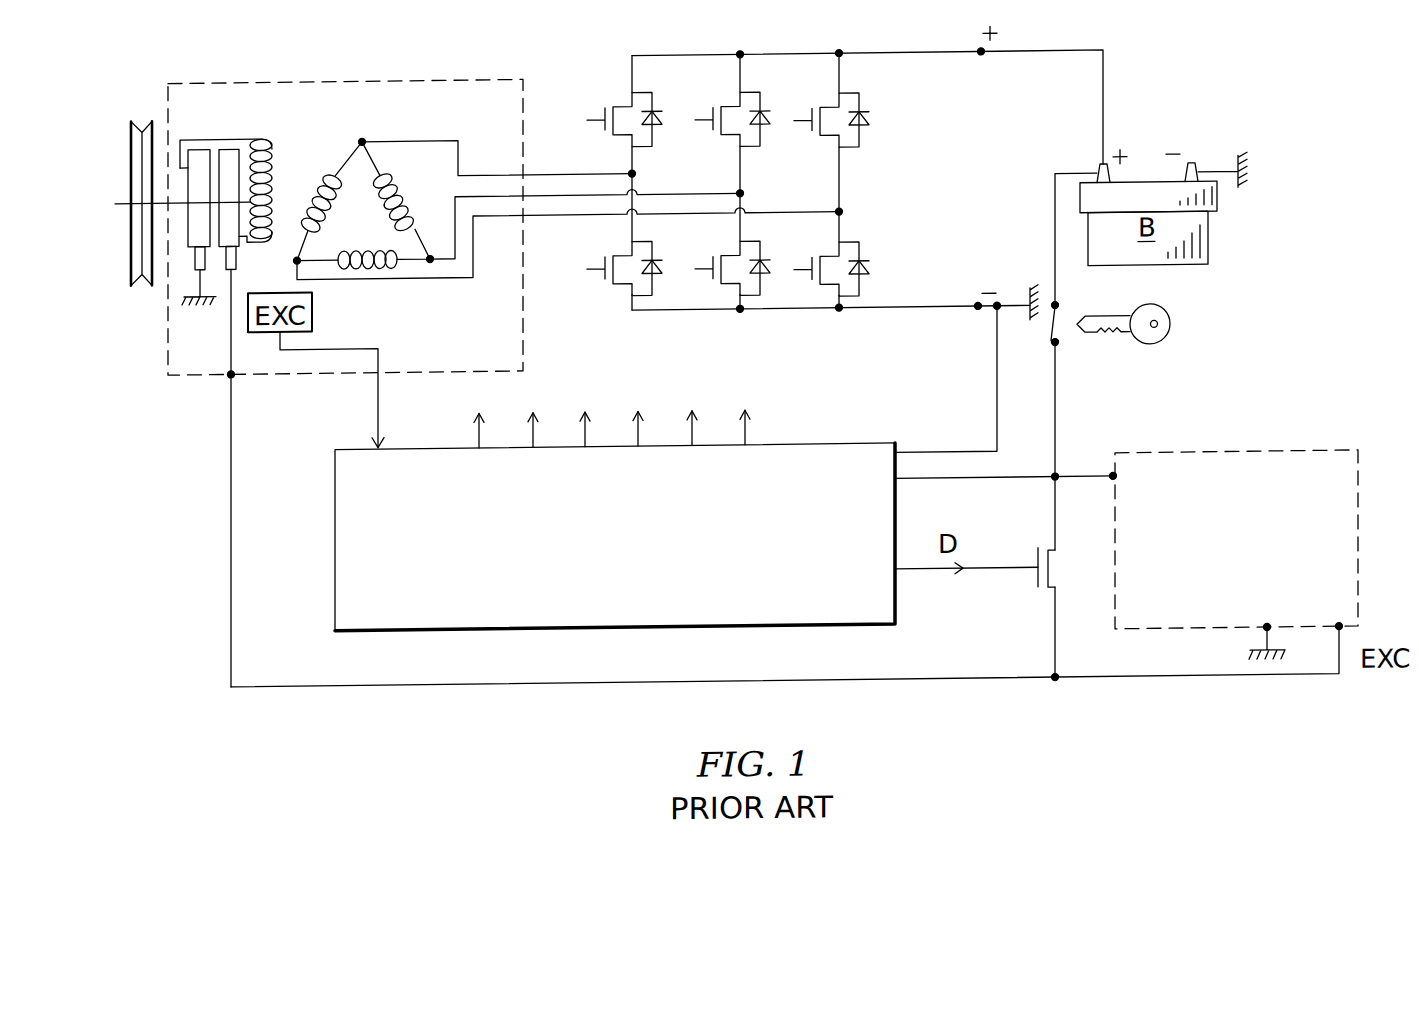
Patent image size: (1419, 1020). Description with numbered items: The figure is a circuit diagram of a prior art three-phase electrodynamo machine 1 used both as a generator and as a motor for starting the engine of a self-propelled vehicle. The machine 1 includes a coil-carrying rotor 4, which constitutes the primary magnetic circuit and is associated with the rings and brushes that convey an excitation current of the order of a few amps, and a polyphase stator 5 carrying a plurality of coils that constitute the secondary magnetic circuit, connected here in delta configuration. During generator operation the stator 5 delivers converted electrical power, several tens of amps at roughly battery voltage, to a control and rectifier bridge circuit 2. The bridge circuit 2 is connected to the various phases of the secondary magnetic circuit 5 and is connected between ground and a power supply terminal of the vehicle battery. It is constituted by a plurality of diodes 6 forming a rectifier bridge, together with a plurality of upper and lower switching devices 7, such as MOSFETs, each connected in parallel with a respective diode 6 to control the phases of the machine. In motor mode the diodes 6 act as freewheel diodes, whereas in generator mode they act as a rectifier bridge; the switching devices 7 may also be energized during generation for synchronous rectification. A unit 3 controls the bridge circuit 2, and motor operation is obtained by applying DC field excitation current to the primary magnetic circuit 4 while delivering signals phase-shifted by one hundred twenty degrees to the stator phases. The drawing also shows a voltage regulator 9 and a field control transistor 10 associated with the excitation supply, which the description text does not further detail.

The three-phase electrodynamo machine 1 is at (140, 292).
The control and rectifier bridge circuit 2 is at (844, 176).
The unit for controlling the bridge circuit 3 is at (620, 507).
The coil-carrying rotor 4 is at (217, 124).
The polyphase stator 5 is at (428, 124).
The diode 6 is at (864, 131).
The switching device 7 is at (829, 143).
The voltage regulator 9 is at (1247, 607).
The field control transistor 10 is at (1035, 586).